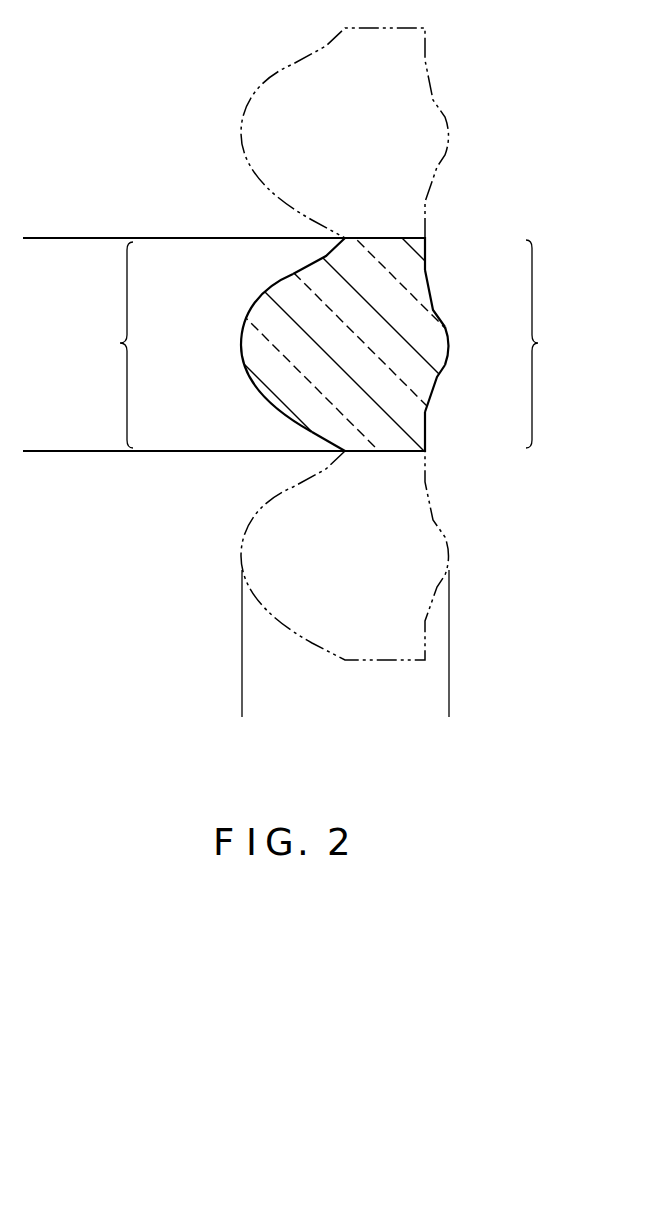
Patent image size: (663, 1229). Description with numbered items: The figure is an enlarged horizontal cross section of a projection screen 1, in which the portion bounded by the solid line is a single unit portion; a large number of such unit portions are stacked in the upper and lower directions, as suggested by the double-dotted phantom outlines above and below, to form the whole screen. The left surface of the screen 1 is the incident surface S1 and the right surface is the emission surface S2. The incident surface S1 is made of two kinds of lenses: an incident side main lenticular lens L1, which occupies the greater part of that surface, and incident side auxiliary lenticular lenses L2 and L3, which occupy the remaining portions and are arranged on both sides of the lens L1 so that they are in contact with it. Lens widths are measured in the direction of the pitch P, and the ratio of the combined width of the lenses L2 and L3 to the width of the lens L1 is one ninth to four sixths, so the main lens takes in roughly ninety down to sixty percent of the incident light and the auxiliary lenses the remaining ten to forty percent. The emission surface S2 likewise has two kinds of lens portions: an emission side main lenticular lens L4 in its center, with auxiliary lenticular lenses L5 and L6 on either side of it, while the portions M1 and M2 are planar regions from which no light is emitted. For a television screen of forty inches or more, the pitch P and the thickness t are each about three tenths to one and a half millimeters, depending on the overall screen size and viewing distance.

The screen 1 is at (412, 68).
The pitch P is at (30, 238).
The incident surface S1 is at (108, 345).
The emission surface S2 is at (553, 344).
The incident side main lenticular lens L1 is at (241, 340).
The incident side auxiliary lenticular lens L2 is at (326, 257).
The incident side auxiliary lenticular lens L3 is at (312, 438).
The emission side main lenticular lens L4 is at (450, 346).
The emission side auxiliary lenticular lens L5 is at (433, 296).
The emission side auxiliary lenticular lens L6 is at (437, 396).
The non-emitting portion M1 is at (428, 253).
The non-emitting portion M2 is at (428, 437).
The thickness t is at (449, 708).